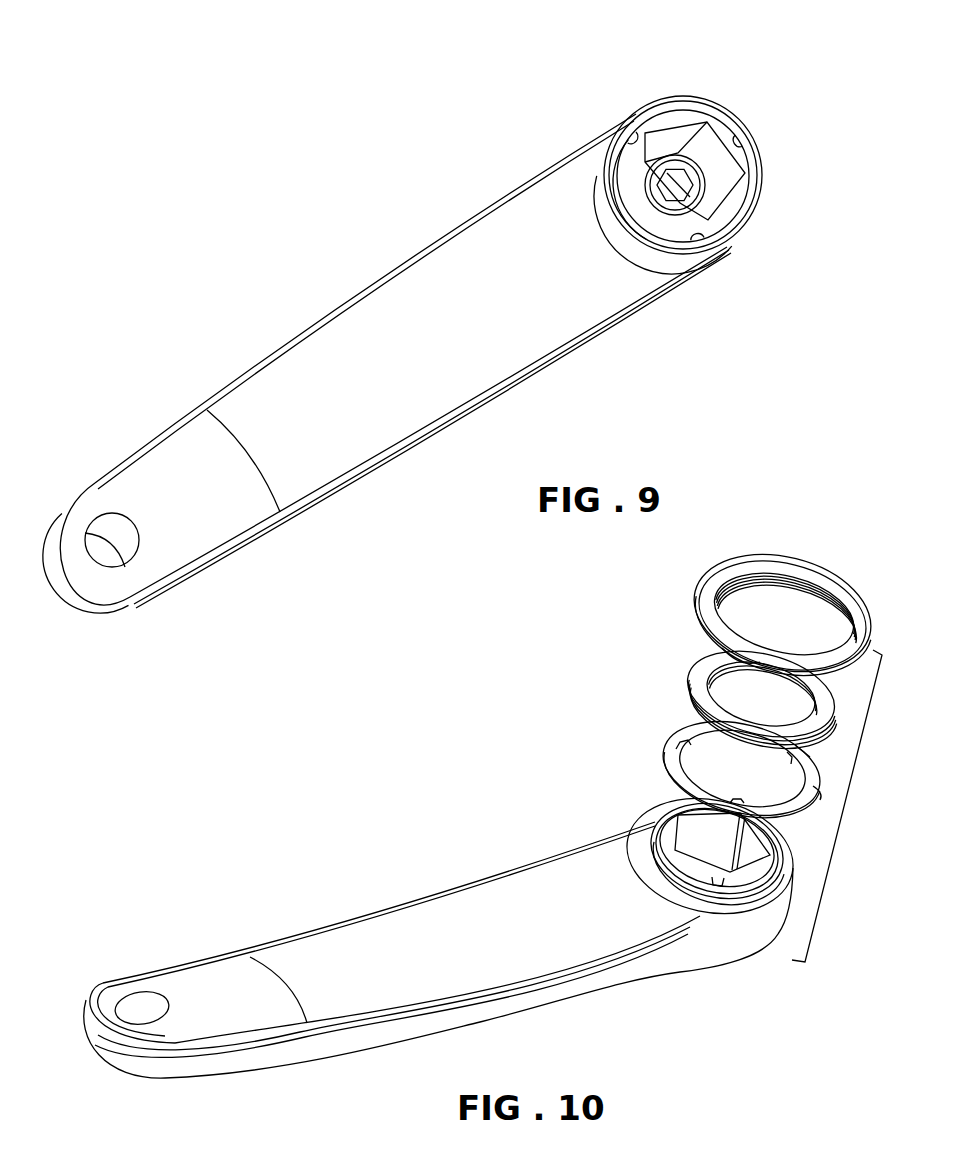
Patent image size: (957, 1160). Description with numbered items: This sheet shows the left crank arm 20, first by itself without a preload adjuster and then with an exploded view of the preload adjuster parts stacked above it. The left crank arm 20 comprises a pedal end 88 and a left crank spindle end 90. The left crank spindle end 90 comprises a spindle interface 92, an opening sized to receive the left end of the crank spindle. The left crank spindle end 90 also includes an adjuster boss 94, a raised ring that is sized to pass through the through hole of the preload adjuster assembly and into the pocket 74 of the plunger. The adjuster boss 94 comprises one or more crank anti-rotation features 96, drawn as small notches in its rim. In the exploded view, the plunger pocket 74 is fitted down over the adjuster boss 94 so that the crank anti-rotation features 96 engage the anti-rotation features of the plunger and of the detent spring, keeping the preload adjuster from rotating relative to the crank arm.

In FIG. 9, the left crank arm 20 is at (372, 313).
In FIG. 10, the left crank arm 20 is at (342, 963).
In FIG. 9, the pedal end 88 is at (127, 445).
In FIG. 9, the left crank spindle end 90 is at (630, 112).
In FIG. 9, the spindle interface 92 is at (706, 135).
In FIG. 9, the adjuster boss 94 is at (745, 160).
In FIG. 10, the adjuster boss 94 is at (663, 823).
In FIG. 9, the crank anti-rotation features 96 is at (697, 238).
In FIG. 10, the crank anti-rotation features 96 is at (720, 888).
In FIG. 10, the pocket 74 is at (737, 658).